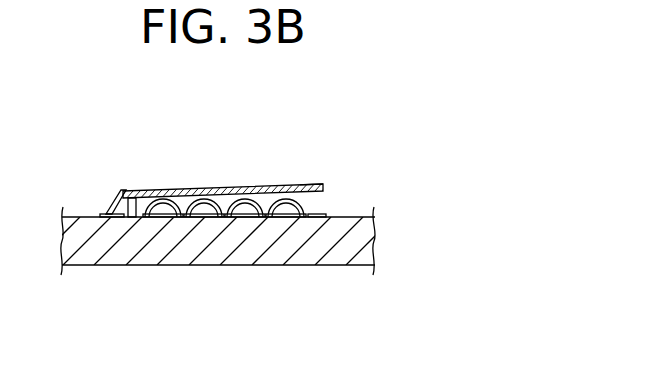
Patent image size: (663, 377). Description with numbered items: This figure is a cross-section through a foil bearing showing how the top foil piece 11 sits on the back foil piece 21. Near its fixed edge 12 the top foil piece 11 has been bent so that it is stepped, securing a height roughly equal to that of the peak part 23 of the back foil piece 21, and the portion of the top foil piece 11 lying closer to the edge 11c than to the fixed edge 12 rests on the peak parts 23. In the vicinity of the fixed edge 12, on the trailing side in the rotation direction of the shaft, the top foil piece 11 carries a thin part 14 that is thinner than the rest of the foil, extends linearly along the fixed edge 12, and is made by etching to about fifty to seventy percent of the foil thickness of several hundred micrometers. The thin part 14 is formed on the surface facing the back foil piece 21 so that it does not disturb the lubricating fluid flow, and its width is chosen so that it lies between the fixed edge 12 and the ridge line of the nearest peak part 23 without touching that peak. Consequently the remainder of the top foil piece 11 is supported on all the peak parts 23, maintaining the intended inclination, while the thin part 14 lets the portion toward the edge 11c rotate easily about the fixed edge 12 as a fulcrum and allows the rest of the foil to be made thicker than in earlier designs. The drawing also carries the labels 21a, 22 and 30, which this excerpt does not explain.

The top foil piece 11 is at (262, 185).
The edge 11c is at (331, 184).
The fixed edge 12 is at (108, 211).
The thin part 14 is at (131, 200).
The back foil piece 21 is at (282, 205).
The electrode pad 21a is at (391, 192).
The wiring 22 is at (320, 211).
The peak part 23 is at (168, 195).
The substrate 30 is at (347, 242).